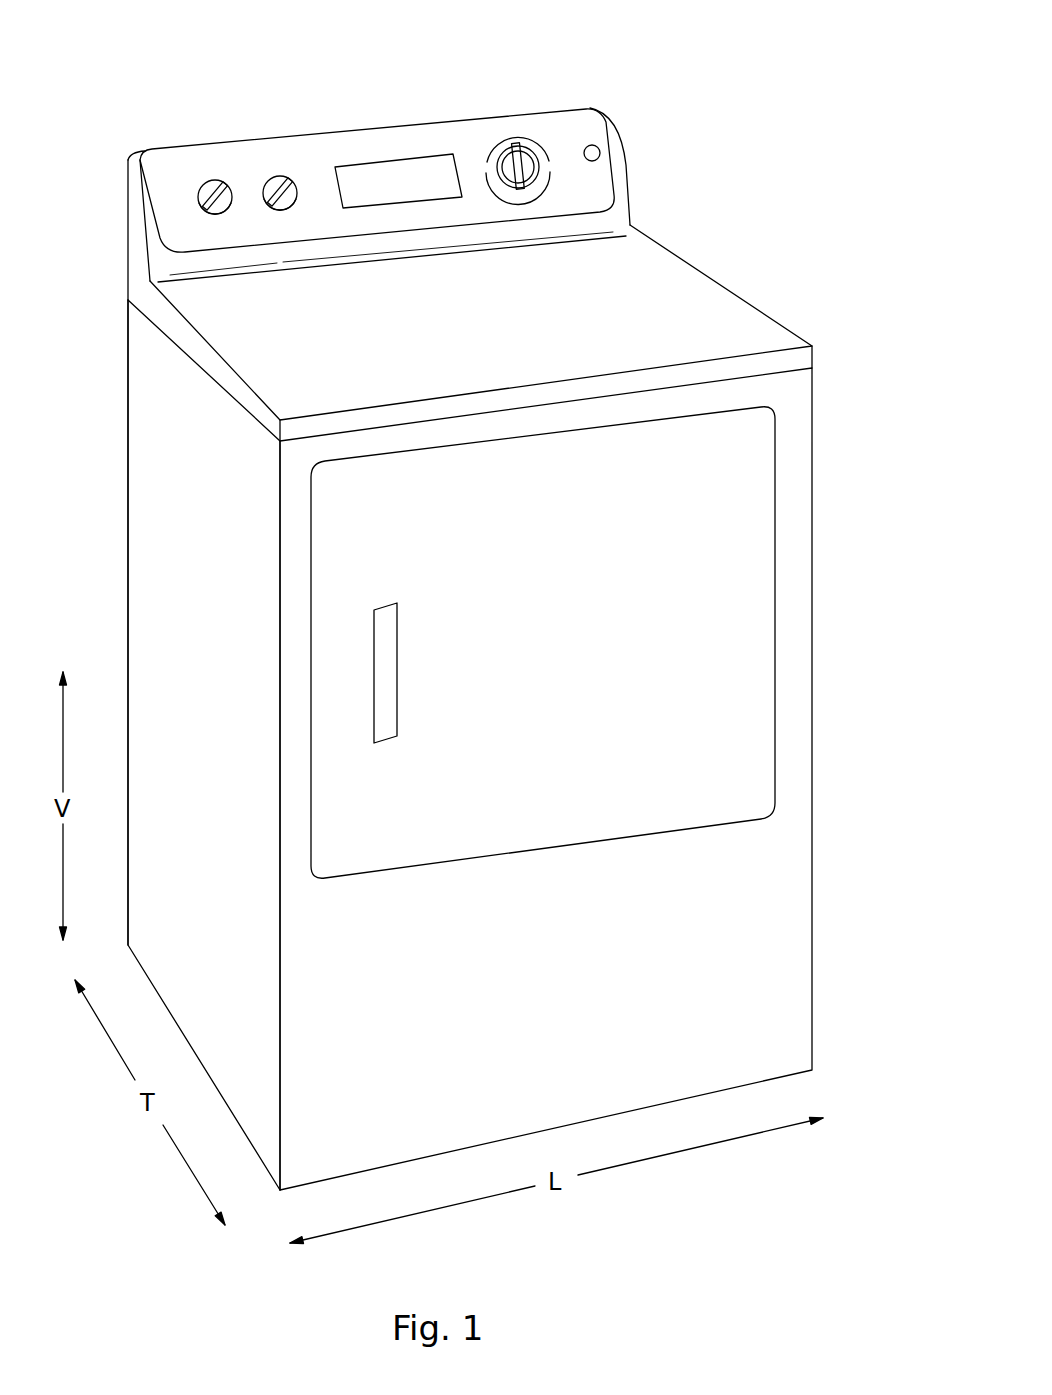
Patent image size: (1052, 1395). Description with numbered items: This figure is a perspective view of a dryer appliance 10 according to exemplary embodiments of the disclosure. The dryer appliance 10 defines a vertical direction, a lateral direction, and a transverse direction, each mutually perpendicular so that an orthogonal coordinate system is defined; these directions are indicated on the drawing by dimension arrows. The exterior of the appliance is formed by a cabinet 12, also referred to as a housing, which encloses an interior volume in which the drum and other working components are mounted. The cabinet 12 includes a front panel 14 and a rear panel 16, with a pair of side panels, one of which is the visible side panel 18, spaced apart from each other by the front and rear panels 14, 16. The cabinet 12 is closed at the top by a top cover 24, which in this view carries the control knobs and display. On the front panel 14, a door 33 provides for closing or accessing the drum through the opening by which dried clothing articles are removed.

The dryer appliance 10 is at (469, 599).
The cabinet 12 is at (469, 675).
The front panel 14 is at (720, 1038).
The rear panel 16 is at (125, 397).
The side panel 18 is at (172, 628).
The top cover 24 is at (660, 318).
The door 33 is at (732, 620).